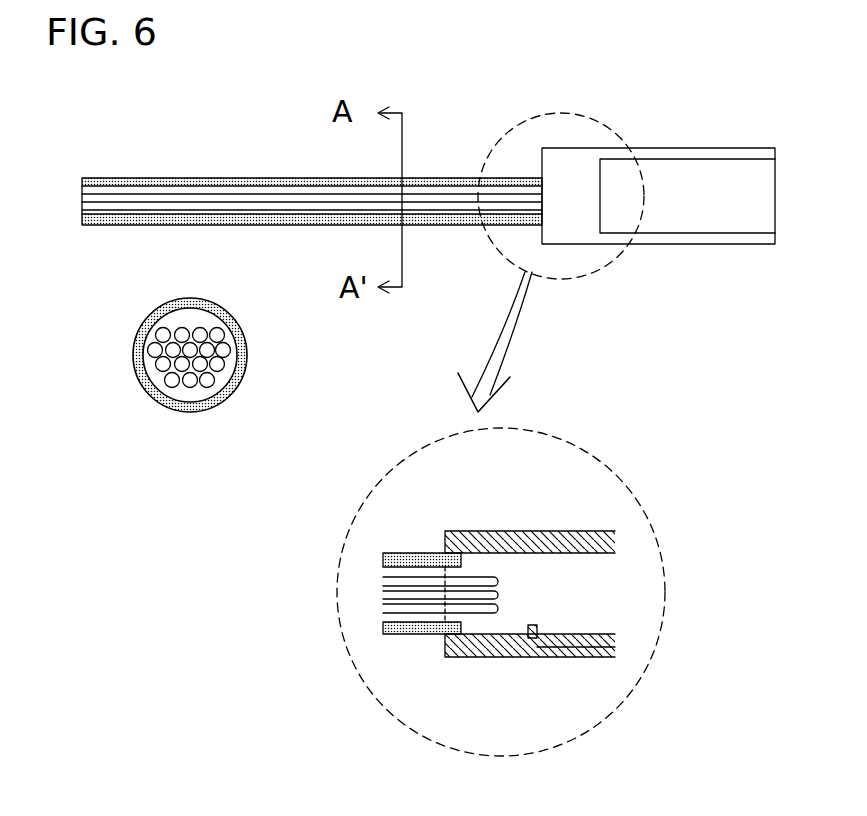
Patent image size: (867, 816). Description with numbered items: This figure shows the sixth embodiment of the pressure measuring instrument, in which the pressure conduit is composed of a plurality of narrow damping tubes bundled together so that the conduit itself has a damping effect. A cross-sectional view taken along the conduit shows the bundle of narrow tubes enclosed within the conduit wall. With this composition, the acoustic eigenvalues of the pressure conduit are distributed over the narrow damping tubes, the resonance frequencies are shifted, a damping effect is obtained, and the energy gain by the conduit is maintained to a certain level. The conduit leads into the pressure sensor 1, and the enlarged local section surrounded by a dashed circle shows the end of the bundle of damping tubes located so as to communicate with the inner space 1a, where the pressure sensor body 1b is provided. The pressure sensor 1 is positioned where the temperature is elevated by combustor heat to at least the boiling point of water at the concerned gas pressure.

The pressure sensor 1 is at (698, 183).
The inner space 1a is at (538, 587).
The pressure sensor body 1b is at (532, 638).